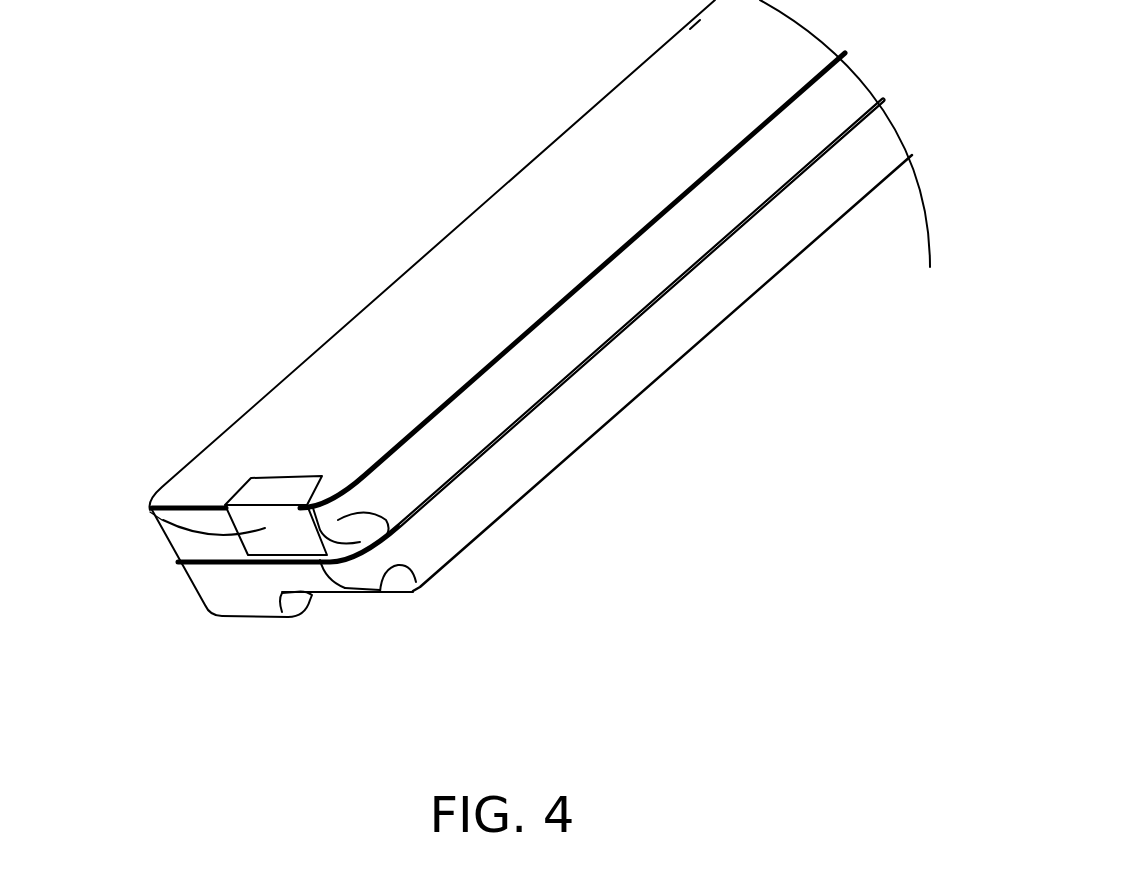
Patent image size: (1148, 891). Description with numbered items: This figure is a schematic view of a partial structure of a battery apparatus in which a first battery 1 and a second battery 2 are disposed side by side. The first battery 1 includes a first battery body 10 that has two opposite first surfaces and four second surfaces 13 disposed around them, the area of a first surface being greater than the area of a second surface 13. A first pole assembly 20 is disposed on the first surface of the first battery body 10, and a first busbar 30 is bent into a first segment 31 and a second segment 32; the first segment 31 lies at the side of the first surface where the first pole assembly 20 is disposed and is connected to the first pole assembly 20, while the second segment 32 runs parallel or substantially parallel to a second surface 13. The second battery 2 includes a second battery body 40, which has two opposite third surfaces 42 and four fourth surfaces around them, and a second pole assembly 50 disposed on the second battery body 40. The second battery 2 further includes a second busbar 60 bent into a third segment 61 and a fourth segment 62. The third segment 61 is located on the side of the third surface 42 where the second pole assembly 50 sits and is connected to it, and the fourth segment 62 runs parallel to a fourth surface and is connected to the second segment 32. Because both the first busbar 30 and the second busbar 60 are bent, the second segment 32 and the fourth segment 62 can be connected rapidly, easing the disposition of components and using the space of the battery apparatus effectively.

The first battery 1 is at (673, 412).
The second battery 2 is at (435, 198).
The first battery body 10 is at (511, 491).
The second surface 13 is at (585, 403).
The first pole assembly 20 is at (410, 512).
The first busbar 30 is at (450, 643).
The first segment 31 is at (425, 582).
The second segment 32 is at (322, 543).
The second battery body 40 is at (415, 288).
The third surface 42 is at (378, 358).
The second pole assembly 50 is at (330, 480).
The second busbar 60 is at (100, 437).
The third segment 61 is at (150, 503).
The fourth segment 62 is at (265, 483).